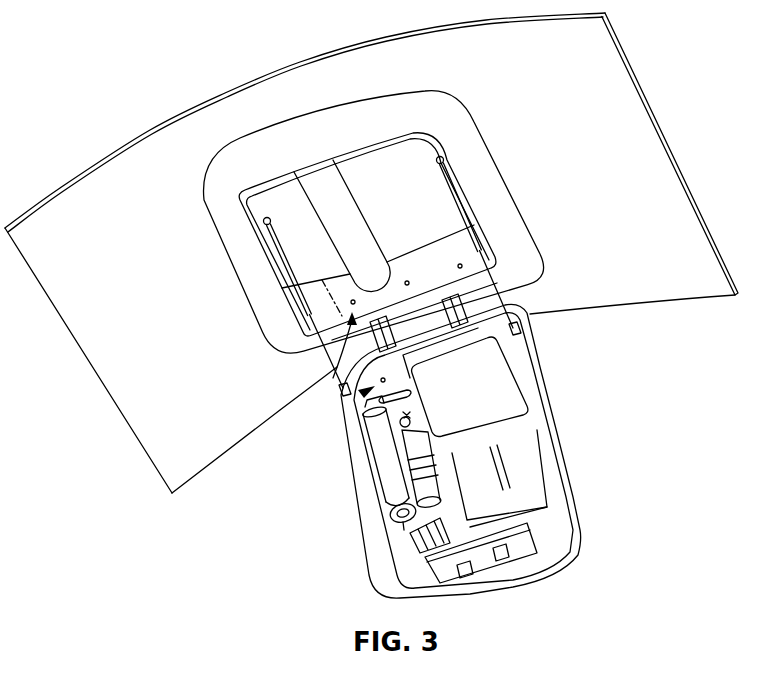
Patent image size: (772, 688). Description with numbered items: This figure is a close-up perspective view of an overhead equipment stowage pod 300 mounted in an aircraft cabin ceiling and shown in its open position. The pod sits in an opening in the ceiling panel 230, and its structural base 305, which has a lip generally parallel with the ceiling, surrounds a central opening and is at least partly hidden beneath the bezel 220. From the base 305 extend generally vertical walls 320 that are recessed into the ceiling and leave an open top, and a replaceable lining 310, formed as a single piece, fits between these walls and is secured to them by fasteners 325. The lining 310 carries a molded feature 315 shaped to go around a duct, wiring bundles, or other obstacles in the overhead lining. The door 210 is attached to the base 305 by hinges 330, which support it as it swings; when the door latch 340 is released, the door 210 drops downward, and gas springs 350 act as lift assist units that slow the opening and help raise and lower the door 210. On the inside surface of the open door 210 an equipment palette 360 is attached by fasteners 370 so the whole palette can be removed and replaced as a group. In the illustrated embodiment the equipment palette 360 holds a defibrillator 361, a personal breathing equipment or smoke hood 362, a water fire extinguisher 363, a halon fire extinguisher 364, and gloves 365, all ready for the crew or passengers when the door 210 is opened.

The overhead equipment stowage pod 300 is at (186, 78).
The ceiling panel 230 is at (143, 237).
The bezel 220 is at (330, 151).
The replaceable lining 310 is at (410, 187).
The molded feature 315 is at (355, 242).
The generally vertical walls 320 is at (457, 287).
The base 305 is at (500, 308).
The fasteners 325 is at (337, 345).
The hinges 330 is at (535, 347).
The gas springs 350 is at (340, 365).
The fasteners 370 is at (356, 392).
The door 210 is at (575, 513).
The equipment palette 360 is at (553, 427).
The defibrillator 361 is at (522, 381).
The personal breathing equipment (PBE) or smoke hood 362 is at (520, 457).
The water fire extinguisher 363 is at (383, 463).
The halon fire extinguisher 364 is at (423, 488).
The gloves 365 is at (410, 543).
The door latch 340 is at (533, 533).